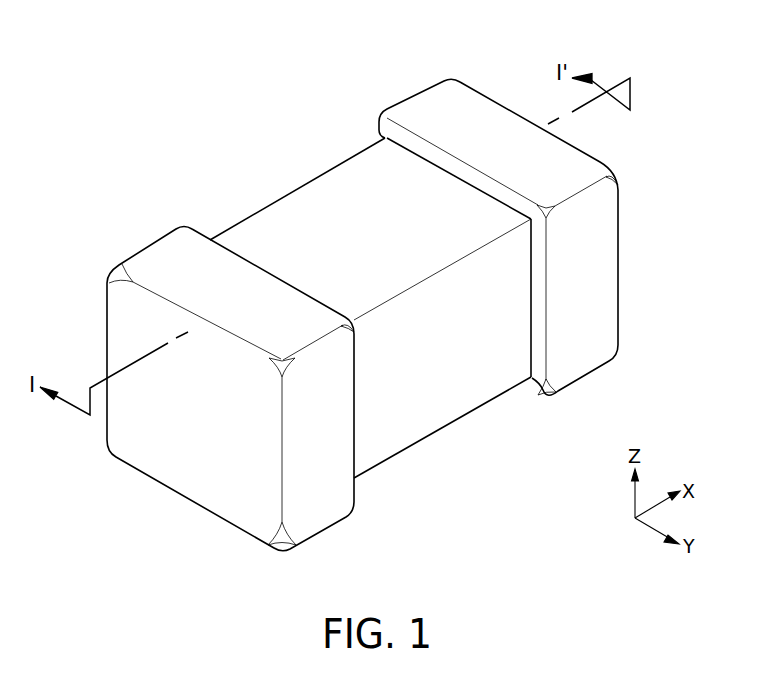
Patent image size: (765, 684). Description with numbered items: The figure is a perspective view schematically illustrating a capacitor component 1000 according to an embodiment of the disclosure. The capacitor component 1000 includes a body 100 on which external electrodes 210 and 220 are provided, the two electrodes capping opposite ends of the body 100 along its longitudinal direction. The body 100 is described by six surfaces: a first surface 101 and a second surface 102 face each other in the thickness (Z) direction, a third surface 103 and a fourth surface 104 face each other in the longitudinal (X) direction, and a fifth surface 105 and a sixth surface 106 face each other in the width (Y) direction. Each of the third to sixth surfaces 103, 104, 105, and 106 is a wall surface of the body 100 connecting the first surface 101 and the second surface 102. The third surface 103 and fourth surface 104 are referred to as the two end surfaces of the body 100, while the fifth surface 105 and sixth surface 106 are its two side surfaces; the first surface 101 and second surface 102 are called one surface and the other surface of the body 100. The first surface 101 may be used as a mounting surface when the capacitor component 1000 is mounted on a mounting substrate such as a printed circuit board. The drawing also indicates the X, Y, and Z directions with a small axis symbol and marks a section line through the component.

The capacitor component 1000 is at (157, 50).
The body 100 is at (367, 139).
The first surface 101 is at (403, 396).
The second surface 102 is at (317, 207).
The third surface 103 is at (200, 457).
The fourth surface 104 is at (570, 251).
The fifth surface 105 is at (449, 373).
The sixth surface 106 is at (300, 238).
The external electrode 210 is at (165, 262).
The external electrode 220 is at (427, 109).